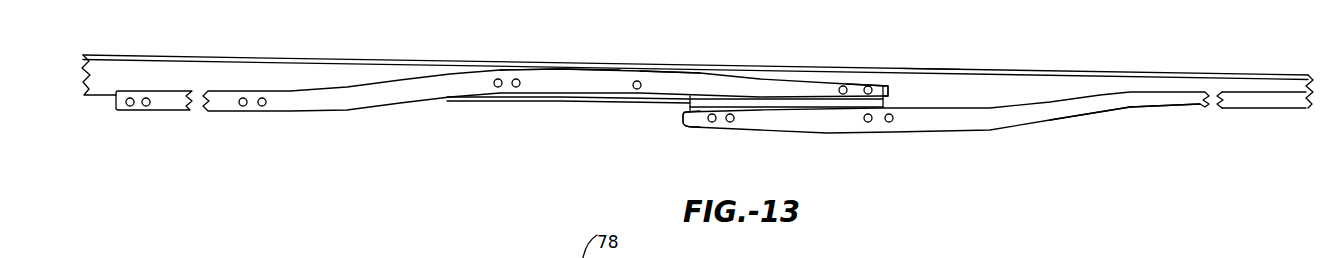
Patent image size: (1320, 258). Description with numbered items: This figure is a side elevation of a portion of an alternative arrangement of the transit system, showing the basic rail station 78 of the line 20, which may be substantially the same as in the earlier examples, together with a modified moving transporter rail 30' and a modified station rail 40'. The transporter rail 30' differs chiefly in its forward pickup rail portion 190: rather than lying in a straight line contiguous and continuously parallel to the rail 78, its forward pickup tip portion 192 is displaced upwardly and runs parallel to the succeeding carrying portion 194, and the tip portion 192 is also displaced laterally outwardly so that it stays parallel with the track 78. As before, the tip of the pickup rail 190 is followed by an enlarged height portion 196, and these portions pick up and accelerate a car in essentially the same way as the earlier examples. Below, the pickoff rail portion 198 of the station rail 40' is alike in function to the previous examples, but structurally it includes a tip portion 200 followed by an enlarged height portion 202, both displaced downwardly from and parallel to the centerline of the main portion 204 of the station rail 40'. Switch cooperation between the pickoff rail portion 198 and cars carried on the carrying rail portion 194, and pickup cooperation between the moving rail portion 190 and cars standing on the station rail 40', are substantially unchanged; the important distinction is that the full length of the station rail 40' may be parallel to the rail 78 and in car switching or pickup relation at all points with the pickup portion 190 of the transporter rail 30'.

The line 20 is at (987, 70).
The moving transporter rail 30' is at (561, 53).
The station rail 40' is at (1125, 126).
The rail 78 is at (937, 68).
The pickup rail portion 190 is at (673, 98).
The forward pickup tip portion 192 is at (890, 92).
The carrying portion 194 is at (287, 112).
The enlarged height portion 196 is at (670, 73).
The pickoff rail portion 198 is at (930, 135).
The tip portion 200 is at (683, 112).
The enlarged height portion 202 is at (817, 135).
The main portion 204 is at (1287, 108).